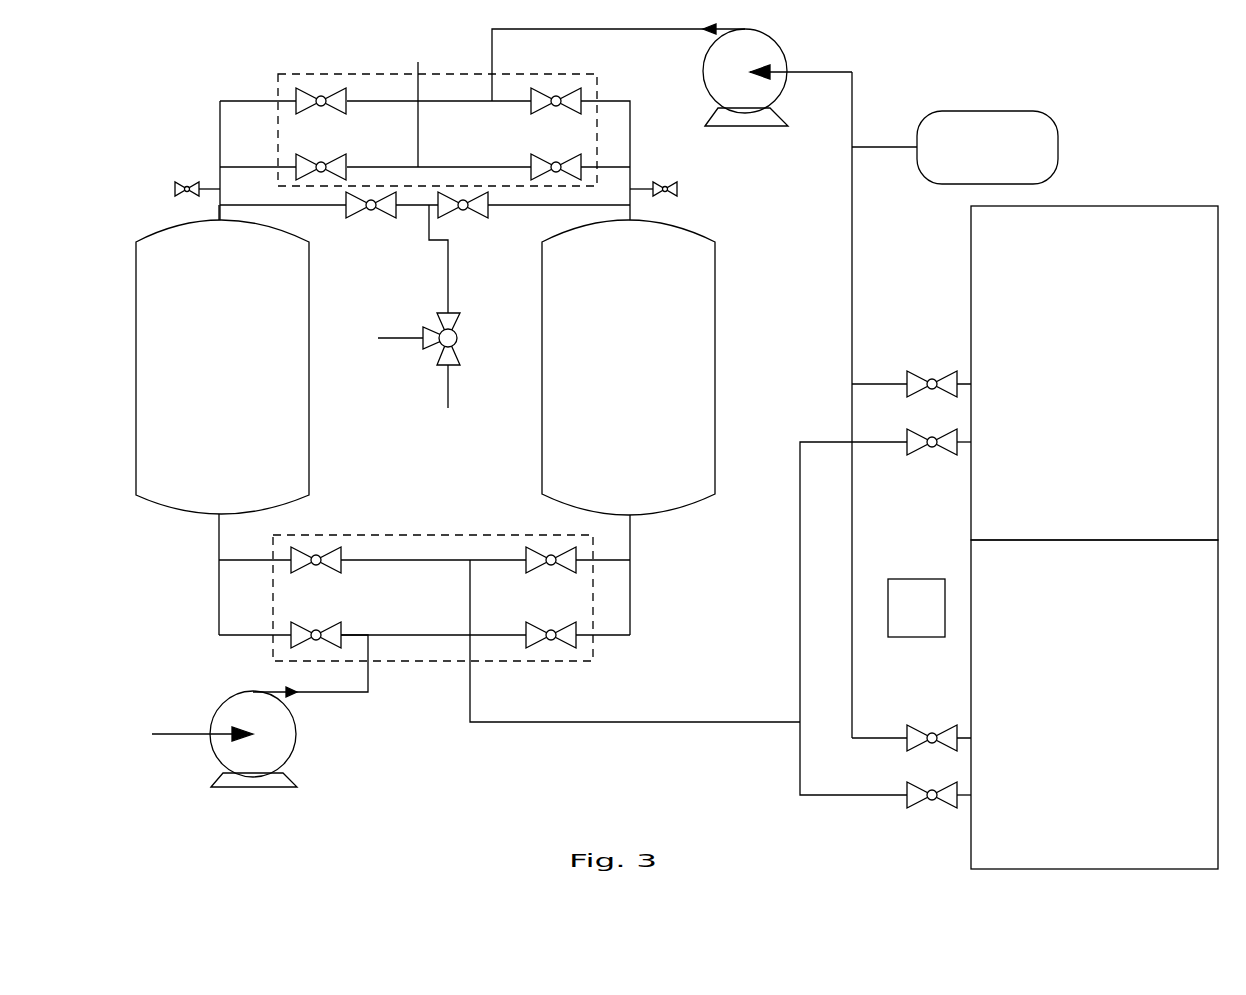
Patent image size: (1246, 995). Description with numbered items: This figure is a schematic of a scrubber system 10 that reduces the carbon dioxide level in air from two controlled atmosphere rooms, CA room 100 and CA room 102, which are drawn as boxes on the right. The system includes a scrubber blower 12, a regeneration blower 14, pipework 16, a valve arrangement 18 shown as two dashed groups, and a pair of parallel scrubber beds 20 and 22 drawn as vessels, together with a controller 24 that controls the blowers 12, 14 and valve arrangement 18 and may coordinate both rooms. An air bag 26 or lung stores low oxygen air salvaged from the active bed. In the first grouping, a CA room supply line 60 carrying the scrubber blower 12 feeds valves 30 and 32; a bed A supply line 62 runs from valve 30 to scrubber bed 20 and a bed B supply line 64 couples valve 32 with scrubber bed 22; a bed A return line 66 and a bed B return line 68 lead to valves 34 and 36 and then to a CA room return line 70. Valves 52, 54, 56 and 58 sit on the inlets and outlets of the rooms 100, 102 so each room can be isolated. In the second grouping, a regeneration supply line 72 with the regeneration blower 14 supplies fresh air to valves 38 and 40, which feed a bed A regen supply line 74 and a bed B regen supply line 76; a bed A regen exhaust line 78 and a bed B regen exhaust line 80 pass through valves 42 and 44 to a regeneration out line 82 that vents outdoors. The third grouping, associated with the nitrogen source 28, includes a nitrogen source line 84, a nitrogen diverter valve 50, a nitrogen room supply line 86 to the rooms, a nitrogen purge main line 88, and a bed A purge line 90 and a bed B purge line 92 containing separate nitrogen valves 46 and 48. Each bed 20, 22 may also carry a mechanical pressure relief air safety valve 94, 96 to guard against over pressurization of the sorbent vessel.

The scrubber system 10 is at (214, 71).
The scrubber blower 12 is at (766, 124).
The regeneration blower 14 is at (272, 790).
The pipework 16 is at (212, 131).
The valve arrangement 18 is at (316, 73).
The scrubber bed 20 is at (222, 359).
The scrubber bed 22 is at (628, 367).
The controller 24 is at (916, 608).
The air bag 26 is at (930, 108).
The nitrogen source 28 is at (368, 316).
The valve 30 is at (310, 106).
The valve 32 is at (572, 106).
The valve 34 is at (332, 568).
The valve 36 is at (534, 568).
The valve 38 is at (334, 642).
The valve 40 is at (532, 642).
The valve 42 is at (300, 175).
The valve 44 is at (572, 176).
The nitrogen valve 46 is at (388, 212).
The nitrogen valve 48 is at (480, 212).
The nitrogen diverter valve 50 is at (462, 332).
The valve 52 is at (916, 392).
The valve 54 is at (916, 450).
The valve 56 is at (916, 746).
The valve 58 is at (916, 803).
The CA room supply line 60 is at (575, 32).
The bed A supply line 62 is at (277, 93).
The bed B supply line 64 is at (630, 100).
The bed A return line 66 is at (270, 558).
The bed B return line 68 is at (618, 558).
The CA room return line 70 is at (662, 720).
The regeneration supply line 72 is at (370, 672).
The bed A regen supply line 74 is at (272, 633).
The bed B regen supply line 76 is at (608, 638).
The bed A regen exhaust line 78 is at (277, 158).
The bed B regen exhaust line 80 is at (625, 170).
The regeneration out line 82 is at (418, 94).
The nitrogen source line 84 is at (416, 340).
The nitrogen room supply line 86 is at (448, 409).
The nitrogen purge main line 88 is at (448, 298).
The bed A purge line 90 is at (313, 205).
The bed B purge line 92 is at (532, 208).
The mechanical pressure relief air safety valve 94 is at (178, 197).
The mechanical pressure relief air safety valve 96 is at (668, 196).
The CA room 100 is at (1094, 373).
The CA room 102 is at (1094, 704).